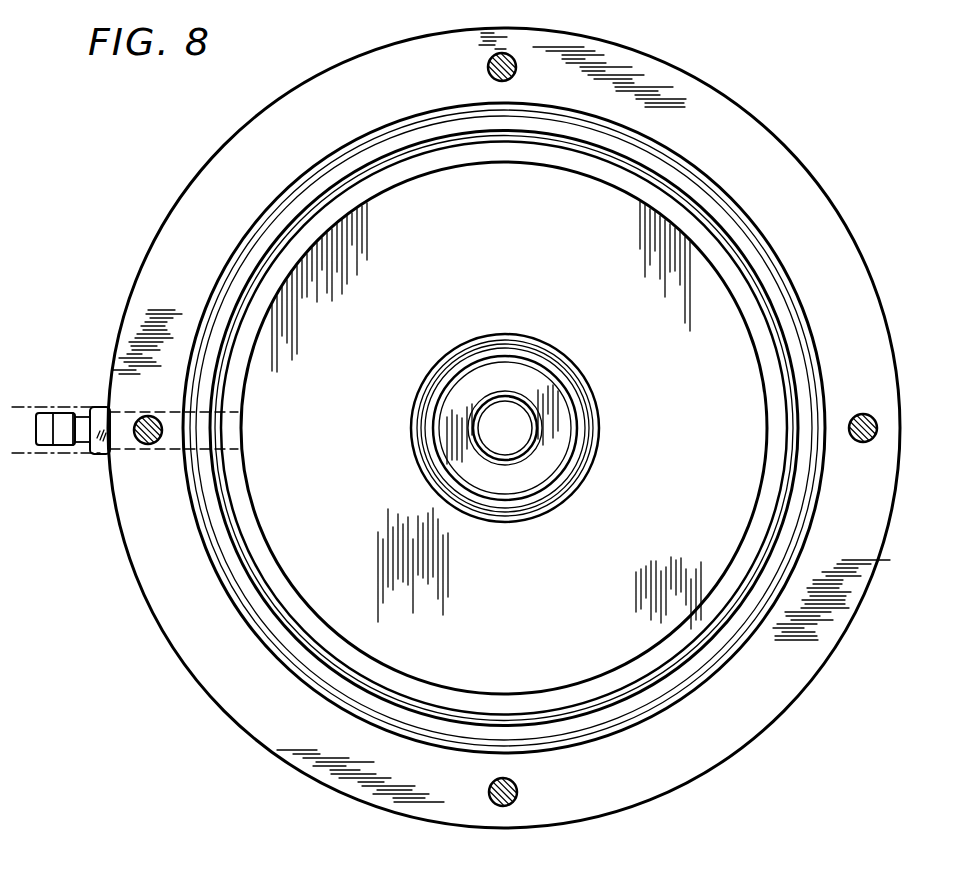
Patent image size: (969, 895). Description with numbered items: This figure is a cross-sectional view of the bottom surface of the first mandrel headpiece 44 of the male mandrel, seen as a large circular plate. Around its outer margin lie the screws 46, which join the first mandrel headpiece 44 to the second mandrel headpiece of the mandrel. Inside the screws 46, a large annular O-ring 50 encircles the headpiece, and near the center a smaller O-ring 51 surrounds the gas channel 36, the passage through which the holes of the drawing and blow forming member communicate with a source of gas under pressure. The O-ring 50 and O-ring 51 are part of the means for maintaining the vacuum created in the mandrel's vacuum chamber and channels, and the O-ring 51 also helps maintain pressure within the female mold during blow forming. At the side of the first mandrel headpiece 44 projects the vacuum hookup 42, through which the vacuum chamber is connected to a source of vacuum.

The gas channel 36 is at (507, 441).
The vacuum hookup 42 is at (62, 410).
The first mandrel headpiece 44 is at (626, 786).
The screws 46 is at (487, 67).
The O-ring 50 is at (322, 175).
The O-ring 51 is at (470, 355).